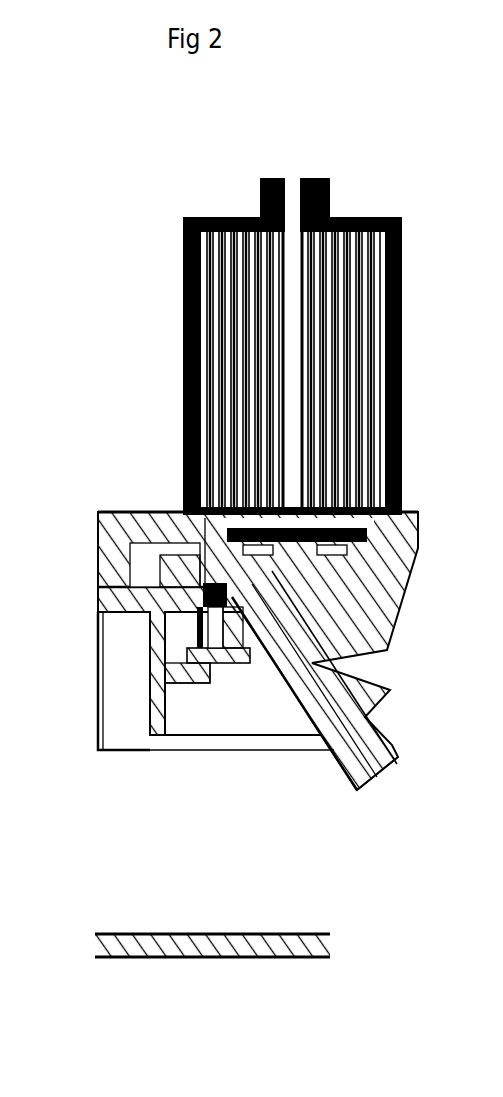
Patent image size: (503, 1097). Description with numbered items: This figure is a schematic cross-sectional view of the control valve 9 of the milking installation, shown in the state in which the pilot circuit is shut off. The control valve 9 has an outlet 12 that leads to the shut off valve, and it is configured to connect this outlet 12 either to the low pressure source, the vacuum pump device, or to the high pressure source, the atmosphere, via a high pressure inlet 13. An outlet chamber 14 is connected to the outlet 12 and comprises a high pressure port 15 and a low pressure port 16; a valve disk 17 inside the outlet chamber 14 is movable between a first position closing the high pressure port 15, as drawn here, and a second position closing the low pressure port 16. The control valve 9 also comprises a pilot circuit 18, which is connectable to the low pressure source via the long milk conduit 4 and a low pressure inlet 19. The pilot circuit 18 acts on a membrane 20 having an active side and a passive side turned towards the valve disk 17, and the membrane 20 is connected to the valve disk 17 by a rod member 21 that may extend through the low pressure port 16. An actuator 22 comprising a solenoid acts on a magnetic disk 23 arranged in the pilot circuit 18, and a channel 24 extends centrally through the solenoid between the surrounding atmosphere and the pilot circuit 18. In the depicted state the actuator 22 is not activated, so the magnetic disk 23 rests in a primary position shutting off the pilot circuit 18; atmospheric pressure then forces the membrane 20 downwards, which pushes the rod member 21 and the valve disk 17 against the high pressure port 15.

The long milk conduit 4 is at (182, 910).
The control valve 9 is at (157, 477).
The outlet 12 is at (358, 757).
The high pressure inlet 13 is at (362, 673).
The outlet chamber 14 is at (183, 645).
The high pressure port 15 is at (207, 673).
The low pressure port 16 is at (193, 627).
The valve disk 17 is at (222, 672).
The pilot circuit 18 is at (210, 548).
The low pressure inlet 19 is at (125, 732).
The membrane 20 is at (187, 588).
The rod member 21 is at (215, 625).
The actuator 22 is at (225, 330).
The magnetic disk 23 is at (352, 533).
The channel 24 is at (293, 393).